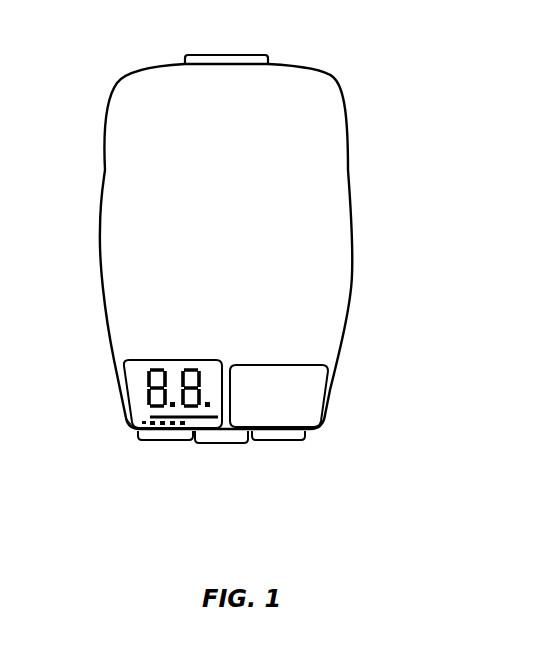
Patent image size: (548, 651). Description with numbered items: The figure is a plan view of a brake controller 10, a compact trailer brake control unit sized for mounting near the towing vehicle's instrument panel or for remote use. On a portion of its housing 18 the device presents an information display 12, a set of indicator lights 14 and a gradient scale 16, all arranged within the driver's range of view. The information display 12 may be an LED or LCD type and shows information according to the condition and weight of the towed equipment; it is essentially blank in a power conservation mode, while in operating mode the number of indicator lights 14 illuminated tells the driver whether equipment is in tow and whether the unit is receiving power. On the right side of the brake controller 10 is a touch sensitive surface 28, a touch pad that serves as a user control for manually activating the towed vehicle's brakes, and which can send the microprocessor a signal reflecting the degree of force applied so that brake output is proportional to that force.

The brake controller 10 is at (232, 238).
The information display 12 is at (124, 371).
The indicator lights 14 is at (131, 431).
The gradient scale 16 is at (150, 415).
The housing 18 is at (314, 268).
The touch sensitive surface 28 is at (306, 397).